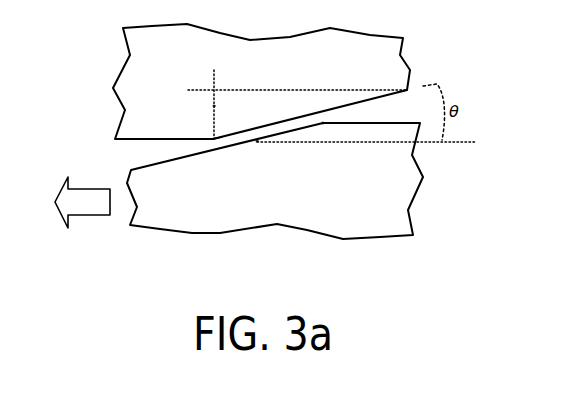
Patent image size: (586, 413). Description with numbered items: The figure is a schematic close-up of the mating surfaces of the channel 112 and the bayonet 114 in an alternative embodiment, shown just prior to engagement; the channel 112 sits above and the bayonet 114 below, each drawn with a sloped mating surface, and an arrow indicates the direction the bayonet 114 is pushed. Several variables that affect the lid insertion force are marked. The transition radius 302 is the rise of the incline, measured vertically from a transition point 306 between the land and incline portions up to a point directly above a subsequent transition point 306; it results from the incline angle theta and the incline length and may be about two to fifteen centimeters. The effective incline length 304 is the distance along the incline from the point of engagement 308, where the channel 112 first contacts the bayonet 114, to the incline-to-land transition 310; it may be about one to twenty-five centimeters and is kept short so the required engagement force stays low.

The channel 112 is at (144, 58).
The bayonet 114 is at (218, 221).
The transition radius 302 is at (214, 107).
The effective incline length 304 is at (321, 108).
The transition point 306 is at (213, 139).
The point of engagement 308 is at (257, 141).
The incline portion to land portion transition 310 is at (323, 124).